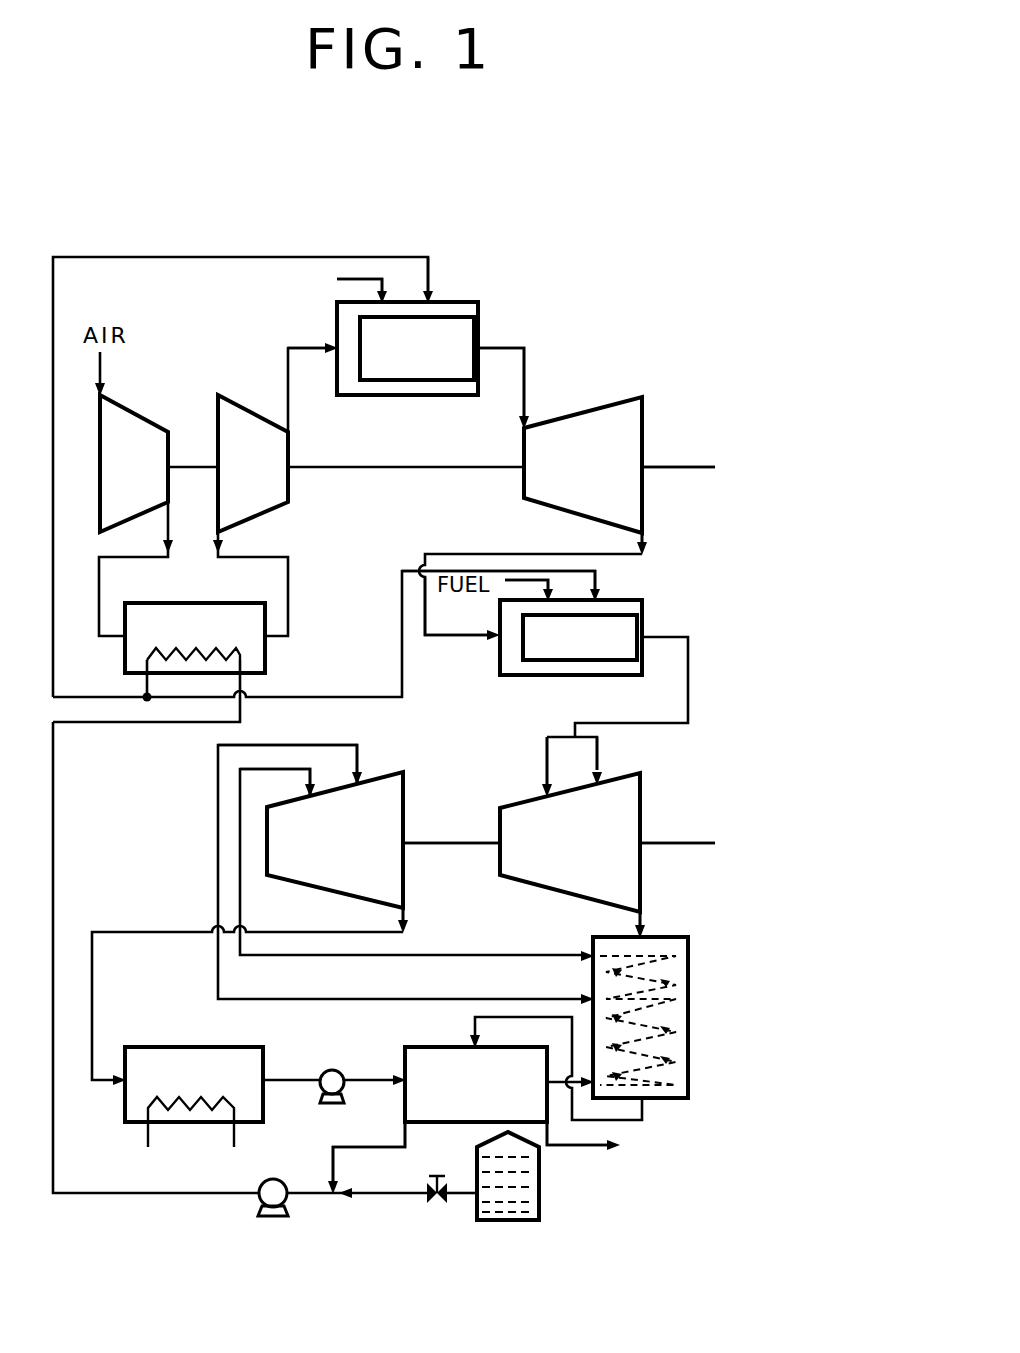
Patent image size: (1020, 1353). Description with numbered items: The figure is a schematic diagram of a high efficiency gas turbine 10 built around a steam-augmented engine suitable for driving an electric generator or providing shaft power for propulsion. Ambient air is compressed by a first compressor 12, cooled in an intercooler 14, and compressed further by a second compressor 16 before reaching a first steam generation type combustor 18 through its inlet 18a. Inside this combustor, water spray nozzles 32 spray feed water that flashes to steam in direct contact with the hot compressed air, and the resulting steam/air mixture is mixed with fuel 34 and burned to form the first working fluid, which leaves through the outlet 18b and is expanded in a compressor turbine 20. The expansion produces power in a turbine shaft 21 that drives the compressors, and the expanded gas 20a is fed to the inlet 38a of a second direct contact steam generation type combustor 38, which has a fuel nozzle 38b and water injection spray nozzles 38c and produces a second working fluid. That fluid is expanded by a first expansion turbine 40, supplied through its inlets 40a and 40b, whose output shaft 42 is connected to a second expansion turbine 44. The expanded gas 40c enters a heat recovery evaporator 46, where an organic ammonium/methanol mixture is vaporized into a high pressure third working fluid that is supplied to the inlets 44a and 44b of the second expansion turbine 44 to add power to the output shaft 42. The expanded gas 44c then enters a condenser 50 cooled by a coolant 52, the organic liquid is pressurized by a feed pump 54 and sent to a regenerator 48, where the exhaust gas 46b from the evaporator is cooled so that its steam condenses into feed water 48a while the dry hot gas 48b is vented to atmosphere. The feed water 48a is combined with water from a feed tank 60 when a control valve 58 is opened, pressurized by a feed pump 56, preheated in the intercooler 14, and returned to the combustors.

The gas turbine 10 is at (738, 232).
The first compressor 12 is at (149, 480).
The intercooler 14 is at (209, 635).
The second compressor 16 is at (268, 480).
The first steam generation type combustor 18 is at (405, 300).
The inlet 18a is at (293, 341).
The outlet 18b is at (502, 347).
The compressor turbine 20 is at (605, 480).
The expanded gas 20a is at (646, 532).
The turbine shaft 21 is at (680, 466).
The water spray nozzles 32 is at (433, 275).
The fuel 34 is at (375, 278).
The second direct contact steam generation type combustor 38 is at (498, 617).
The inlet 38a is at (458, 632).
The fuel nozzle 38b is at (552, 592).
The water injection spray nozzles 38c is at (598, 578).
The first expansion turbine 40 is at (590, 852).
The turbine inlet 40a is at (600, 758).
The turbine inlet 40b is at (553, 756).
The expanded gas 40c is at (636, 915).
The output shaft 42 is at (448, 842).
The second expansion turbine 44 is at (358, 858).
The inlet 44a is at (305, 778).
The inlet 44b is at (360, 752).
The expanded gas 44c is at (398, 910).
The heat recovery evaporator 46 is at (662, 935).
The exhaust gas 46b is at (657, 957).
The regenerator 48 is at (492, 1095).
The feed water 48a is at (350, 1148).
The dry hot gas 48b is at (550, 1128).
The condenser 50 is at (212, 1090).
The coolant 52 is at (152, 1125).
The feed pump 54 is at (334, 1068).
The feed pump 56 is at (283, 1178).
The control valve 58 is at (437, 1205).
The feed tank 60 is at (522, 1202).